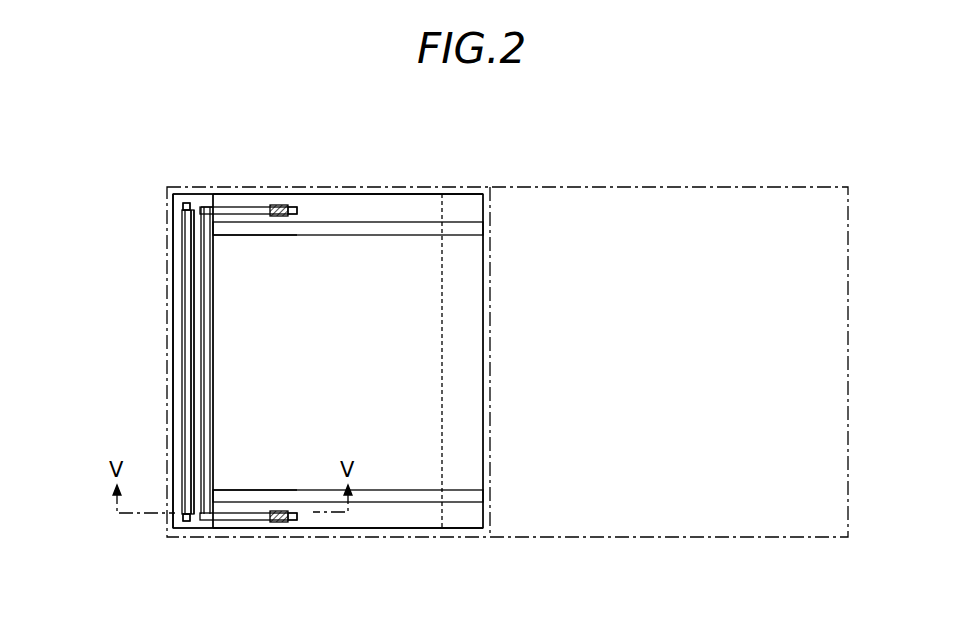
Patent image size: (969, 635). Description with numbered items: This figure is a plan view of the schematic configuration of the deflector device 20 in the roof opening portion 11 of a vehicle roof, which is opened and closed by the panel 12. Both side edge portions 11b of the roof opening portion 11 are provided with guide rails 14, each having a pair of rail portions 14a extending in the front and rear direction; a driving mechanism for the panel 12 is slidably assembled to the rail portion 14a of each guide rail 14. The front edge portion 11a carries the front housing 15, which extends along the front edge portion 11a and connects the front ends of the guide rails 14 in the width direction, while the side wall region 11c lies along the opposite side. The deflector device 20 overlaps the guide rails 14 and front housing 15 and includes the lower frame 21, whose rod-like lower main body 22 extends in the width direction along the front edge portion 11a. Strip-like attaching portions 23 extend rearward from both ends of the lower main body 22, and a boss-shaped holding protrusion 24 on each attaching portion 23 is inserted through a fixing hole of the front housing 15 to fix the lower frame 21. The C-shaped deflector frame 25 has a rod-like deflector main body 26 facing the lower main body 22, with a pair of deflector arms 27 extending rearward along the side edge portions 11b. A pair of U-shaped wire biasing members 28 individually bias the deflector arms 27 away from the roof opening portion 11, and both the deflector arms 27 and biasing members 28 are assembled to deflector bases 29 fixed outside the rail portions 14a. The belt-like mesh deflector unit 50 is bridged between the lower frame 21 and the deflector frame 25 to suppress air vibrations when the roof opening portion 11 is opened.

The roof opening portion 11 is at (458, 187).
The front edge portion 11a is at (181, 343).
The side edge portions 11b is at (362, 194).
The right side wall of housing 11c is at (480, 342).
The panel 12 is at (673, 187).
The guide rails 14 is at (410, 194).
The rail portion 14a is at (392, 235).
The front housing 15 is at (181, 207).
The deflector device 20 is at (172, 258).
The lower frame 21 is at (184, 410).
The lower main body 22 is at (185, 280).
The attaching portions 23 is at (219, 363).
The holding protrusion 24 is at (186, 203).
The deflector frame 25 is at (213, 330).
The deflector main body 26 is at (210, 360).
The deflector arms 27 is at (216, 222).
The biasing members 28 is at (262, 235).
The deflector bases 29 is at (298, 210).
The deflector unit 50 is at (197, 385).